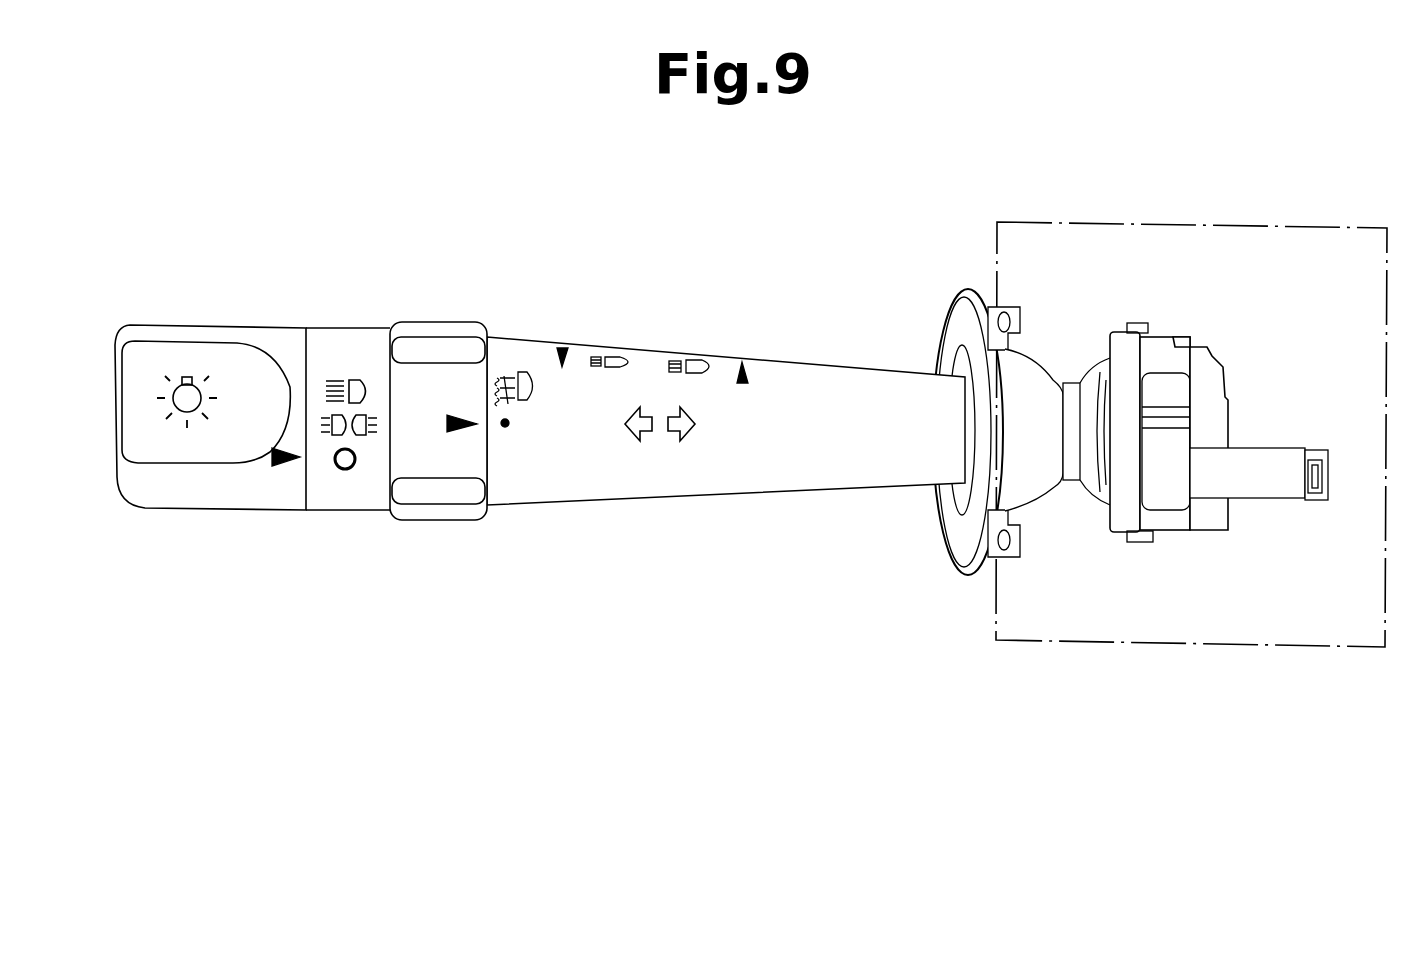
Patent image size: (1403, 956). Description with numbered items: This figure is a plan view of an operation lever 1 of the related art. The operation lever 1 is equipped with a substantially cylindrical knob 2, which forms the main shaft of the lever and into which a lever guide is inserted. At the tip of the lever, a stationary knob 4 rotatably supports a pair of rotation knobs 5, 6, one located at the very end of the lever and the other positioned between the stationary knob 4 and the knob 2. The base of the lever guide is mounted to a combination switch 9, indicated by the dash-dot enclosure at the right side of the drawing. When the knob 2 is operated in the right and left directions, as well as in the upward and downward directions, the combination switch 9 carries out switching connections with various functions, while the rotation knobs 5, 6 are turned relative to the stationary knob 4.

The operation lever 1 is at (604, 546).
The knob 2 is at (788, 385).
The stationary knob 4 is at (348, 333).
The rotation knob 5 is at (213, 330).
The rotation knob 6 is at (446, 332).
The combination switch 9 is at (1143, 224).